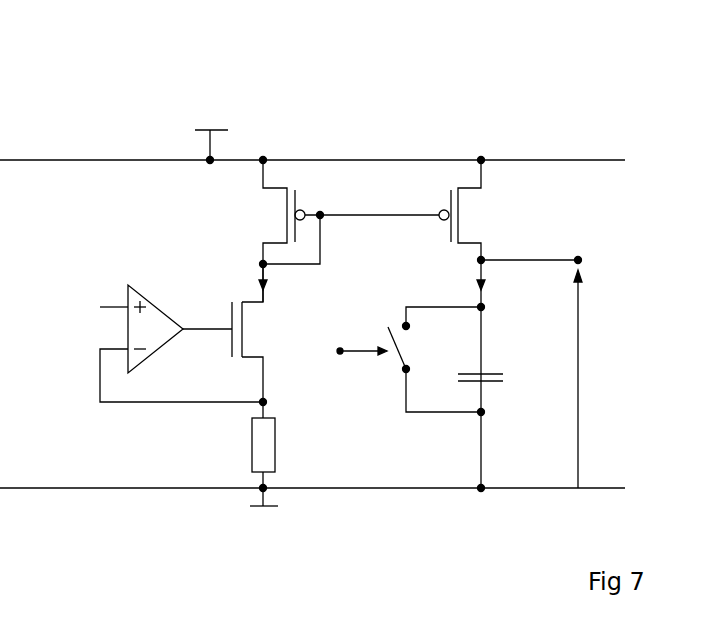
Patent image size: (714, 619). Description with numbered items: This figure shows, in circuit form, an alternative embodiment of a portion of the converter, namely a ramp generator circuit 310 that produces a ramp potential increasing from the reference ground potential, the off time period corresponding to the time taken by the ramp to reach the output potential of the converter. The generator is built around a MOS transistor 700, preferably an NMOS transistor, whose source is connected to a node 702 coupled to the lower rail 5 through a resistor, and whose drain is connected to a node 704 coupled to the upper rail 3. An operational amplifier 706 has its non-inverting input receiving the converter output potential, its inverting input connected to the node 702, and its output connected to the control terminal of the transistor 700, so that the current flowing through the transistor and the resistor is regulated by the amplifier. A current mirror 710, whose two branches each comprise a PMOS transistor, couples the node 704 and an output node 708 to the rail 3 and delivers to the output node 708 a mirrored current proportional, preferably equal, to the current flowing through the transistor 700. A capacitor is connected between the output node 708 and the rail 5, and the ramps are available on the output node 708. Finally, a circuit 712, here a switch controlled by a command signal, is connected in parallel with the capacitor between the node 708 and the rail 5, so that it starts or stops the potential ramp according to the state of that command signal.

The current generation circuit 310 is at (579, 86).
The rail 3 is at (594, 160).
The rail 5 is at (600, 488).
The current mirror 710 is at (322, 189).
The output node 708 is at (482, 258).
The operational amplifier 706 is at (158, 320).
The node 704 is at (262, 264).
The MOS transistor 700 is at (250, 320).
The node 702 is at (265, 401).
The circuit (switch) 712 is at (405, 373).